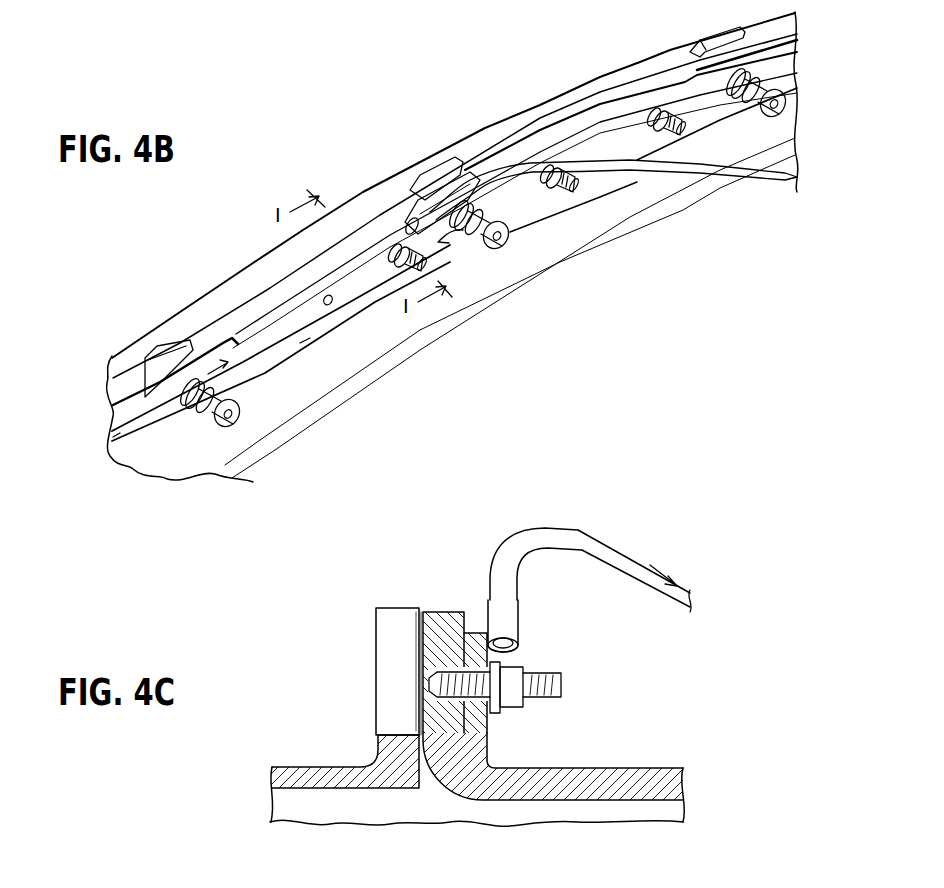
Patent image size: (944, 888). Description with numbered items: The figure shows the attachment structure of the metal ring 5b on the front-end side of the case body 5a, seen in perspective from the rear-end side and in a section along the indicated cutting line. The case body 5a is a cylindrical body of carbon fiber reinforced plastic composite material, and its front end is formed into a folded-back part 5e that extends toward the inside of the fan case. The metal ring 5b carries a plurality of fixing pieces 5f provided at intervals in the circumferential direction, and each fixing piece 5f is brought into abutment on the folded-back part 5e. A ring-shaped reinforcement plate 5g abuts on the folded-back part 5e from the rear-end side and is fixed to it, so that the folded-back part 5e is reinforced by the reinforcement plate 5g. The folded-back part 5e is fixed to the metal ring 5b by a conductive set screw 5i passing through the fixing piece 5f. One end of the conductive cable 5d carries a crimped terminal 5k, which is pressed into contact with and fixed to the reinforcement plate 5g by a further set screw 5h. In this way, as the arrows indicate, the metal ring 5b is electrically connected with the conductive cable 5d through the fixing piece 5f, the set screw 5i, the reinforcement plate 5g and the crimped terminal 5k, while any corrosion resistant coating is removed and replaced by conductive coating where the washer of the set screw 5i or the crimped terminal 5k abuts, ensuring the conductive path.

In FIG. 4B, the case body 5a is at (553, 240).
In FIG. 4C, the case body 5a is at (630, 785).
In FIG. 4C, the metal ring 5b is at (310, 775).
In FIG. 4B, the conductive cable 5d is at (700, 173).
In FIG. 4C, the conductive cable 5d is at (632, 552).
In FIG. 4C, the folded-back part 5e is at (445, 620).
In FIG. 4B, the fixing piece 5f is at (168, 352).
In FIG. 4C, the fixing piece 5f is at (396, 616).
In FIG. 4B, the reinforcement plate 5g is at (162, 440).
In FIG. 4C, the reinforcement plate 5g is at (487, 735).
In FIG. 4B, the set screw 5h is at (430, 268).
In FIG. 4C, the set screw 5h is at (562, 686).
In FIG. 4B, the set screw 5i is at (228, 417).
In FIG. 4B, the crimped terminal 5k is at (405, 200).
In FIG. 4C, the crimped terminal 5k is at (518, 614).